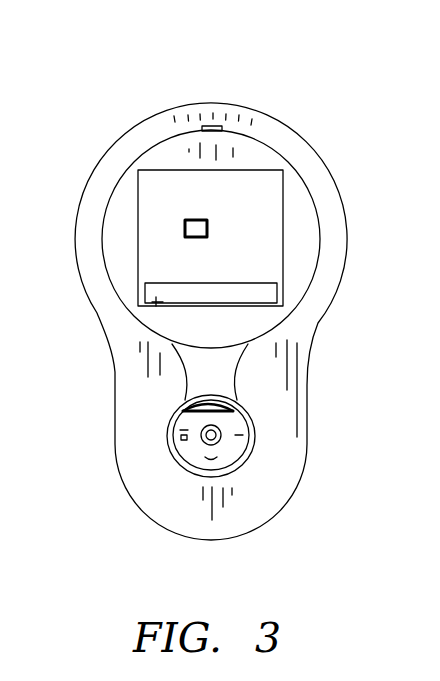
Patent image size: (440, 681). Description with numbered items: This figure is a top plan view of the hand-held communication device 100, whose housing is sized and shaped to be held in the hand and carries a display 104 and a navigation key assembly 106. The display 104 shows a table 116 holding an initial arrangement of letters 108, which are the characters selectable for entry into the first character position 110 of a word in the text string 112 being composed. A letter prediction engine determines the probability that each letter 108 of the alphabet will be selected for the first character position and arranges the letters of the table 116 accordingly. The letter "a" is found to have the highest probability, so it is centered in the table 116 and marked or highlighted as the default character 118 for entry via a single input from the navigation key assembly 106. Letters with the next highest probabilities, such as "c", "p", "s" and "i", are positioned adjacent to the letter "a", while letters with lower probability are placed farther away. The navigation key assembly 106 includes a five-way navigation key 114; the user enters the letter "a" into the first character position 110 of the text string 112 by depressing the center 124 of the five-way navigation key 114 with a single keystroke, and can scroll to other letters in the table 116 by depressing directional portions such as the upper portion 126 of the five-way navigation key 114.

The hand-held communication device 100 is at (253, 100).
The display 104 is at (148, 163).
The navigation key assembly 106 is at (233, 470).
The characters 108 is at (152, 233).
The character position 110 is at (158, 302).
The text string 112 is at (230, 307).
The five-way navigation key 114 is at (240, 422).
The table 116 is at (202, 172).
The default character 118 is at (197, 227).
The center of the five-way navigation key 124 is at (203, 441).
The upper portion of the five-way navigation key 126 is at (187, 400).